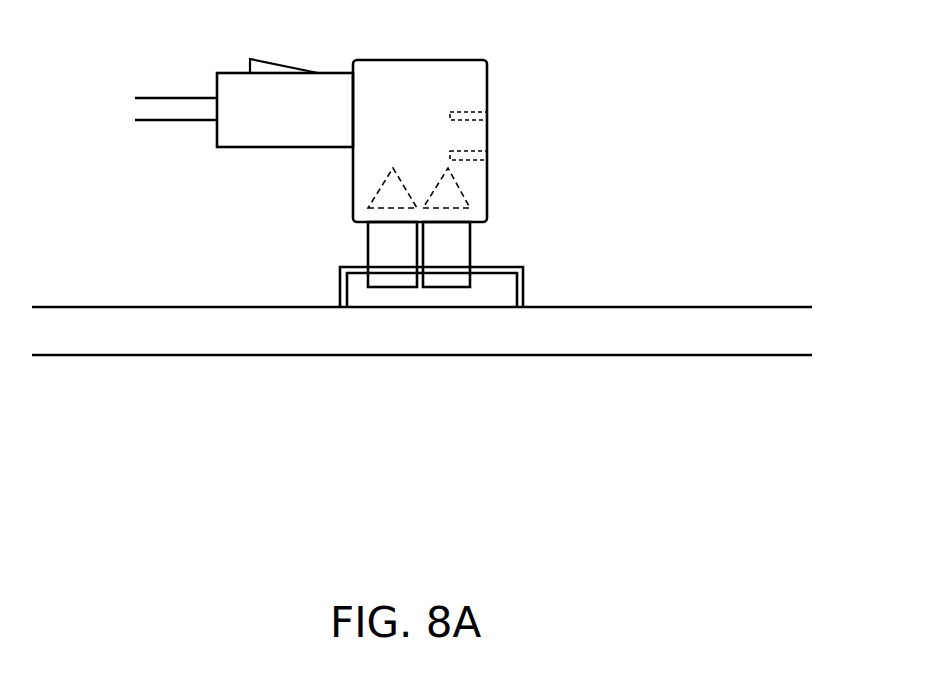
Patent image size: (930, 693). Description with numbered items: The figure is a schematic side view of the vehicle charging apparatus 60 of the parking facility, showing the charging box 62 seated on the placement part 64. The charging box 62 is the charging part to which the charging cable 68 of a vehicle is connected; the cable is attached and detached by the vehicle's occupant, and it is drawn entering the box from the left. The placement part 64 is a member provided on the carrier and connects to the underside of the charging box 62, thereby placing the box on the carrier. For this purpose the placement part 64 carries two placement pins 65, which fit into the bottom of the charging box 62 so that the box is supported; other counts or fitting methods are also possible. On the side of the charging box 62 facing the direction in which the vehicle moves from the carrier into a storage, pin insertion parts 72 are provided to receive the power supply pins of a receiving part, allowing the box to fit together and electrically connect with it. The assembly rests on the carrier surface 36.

The panel / substrate 36 is at (420, 358).
The vehicle charging apparatus 60 is at (640, 113).
The charging box 62 is at (418, 58).
The placement part 64 is at (525, 288).
The placement pins 65 is at (368, 245).
The charging cable 68 is at (330, 72).
The pin insertion parts 72 is at (471, 111).